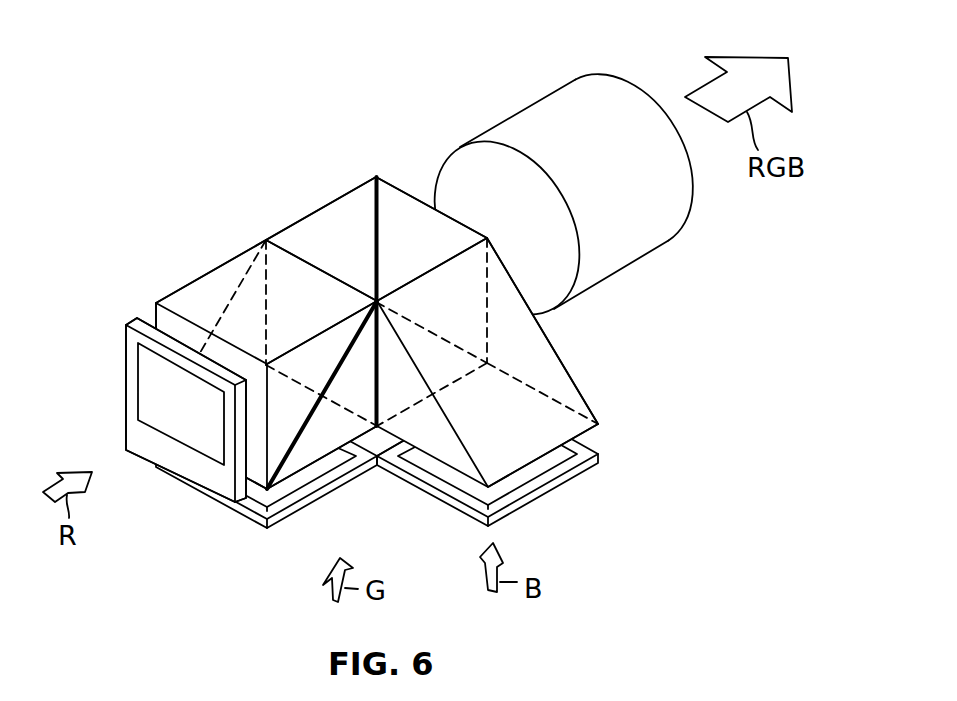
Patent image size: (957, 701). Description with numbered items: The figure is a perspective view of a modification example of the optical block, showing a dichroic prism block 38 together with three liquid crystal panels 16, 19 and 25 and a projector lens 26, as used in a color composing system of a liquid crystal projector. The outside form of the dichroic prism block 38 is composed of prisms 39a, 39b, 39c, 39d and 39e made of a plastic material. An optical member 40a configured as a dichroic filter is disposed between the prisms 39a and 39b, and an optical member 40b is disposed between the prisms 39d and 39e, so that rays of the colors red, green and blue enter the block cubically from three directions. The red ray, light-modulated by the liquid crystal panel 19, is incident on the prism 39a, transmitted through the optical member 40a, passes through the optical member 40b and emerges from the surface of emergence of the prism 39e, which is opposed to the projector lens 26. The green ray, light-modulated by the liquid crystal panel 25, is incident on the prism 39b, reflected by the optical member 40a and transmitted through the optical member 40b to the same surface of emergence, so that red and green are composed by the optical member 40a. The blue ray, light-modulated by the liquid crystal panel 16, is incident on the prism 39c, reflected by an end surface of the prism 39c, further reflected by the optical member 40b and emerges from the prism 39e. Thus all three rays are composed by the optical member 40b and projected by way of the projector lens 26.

The liquid crystal panel 16 is at (530, 498).
The liquid crystal panel 19 is at (200, 473).
The liquid crystal panel 25 is at (280, 527).
The projector lens 26 is at (568, 97).
The dichroic prism block 38 is at (390, 298).
The prism 39a is at (197, 297).
The prism 39b is at (330, 427).
The prism 39c is at (552, 380).
The prism 39d is at (333, 213).
The prism 39e is at (395, 208).
The optical member 40a is at (302, 443).
The optical member 40b is at (369, 192).